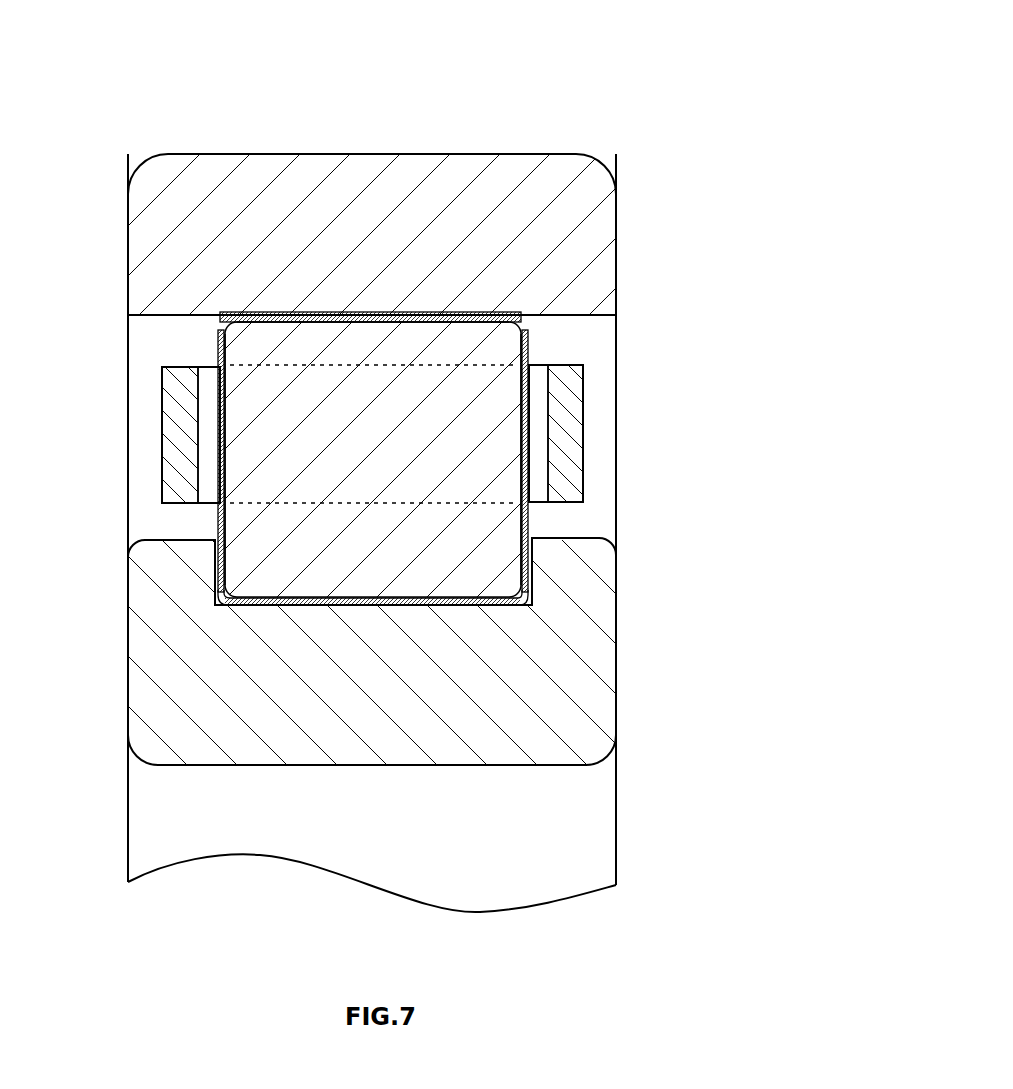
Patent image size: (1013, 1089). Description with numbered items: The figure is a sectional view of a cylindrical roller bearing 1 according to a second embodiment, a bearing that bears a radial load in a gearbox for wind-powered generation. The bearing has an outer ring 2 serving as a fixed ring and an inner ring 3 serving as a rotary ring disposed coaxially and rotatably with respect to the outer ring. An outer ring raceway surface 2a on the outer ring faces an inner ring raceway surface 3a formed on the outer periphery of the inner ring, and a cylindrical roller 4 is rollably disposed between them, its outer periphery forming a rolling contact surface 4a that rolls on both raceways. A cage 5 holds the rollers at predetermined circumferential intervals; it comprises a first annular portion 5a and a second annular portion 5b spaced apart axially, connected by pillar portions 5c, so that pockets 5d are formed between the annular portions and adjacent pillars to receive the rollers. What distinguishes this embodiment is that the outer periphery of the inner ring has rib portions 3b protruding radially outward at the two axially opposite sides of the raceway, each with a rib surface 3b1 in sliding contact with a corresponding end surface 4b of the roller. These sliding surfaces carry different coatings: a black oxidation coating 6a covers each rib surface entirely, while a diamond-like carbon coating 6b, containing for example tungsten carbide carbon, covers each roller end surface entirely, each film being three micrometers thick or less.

The cylindrical roller bearing 1 is at (605, 118).
The outer ring 2 is at (618, 225).
The outer ring raceway surface 2a is at (305, 314).
The inner ring 3 is at (620, 643).
The inner ring raceway surface 3a is at (440, 596).
The rib portion 3b is at (165, 538).
The rib surface 3b1 is at (230, 560).
The cylindrical roller 4 is at (530, 520).
The rolling contact surface 4a is at (438, 322).
The end surface 4b is at (224, 424).
The cage 5 is at (584, 405).
The first annular portion 5a is at (165, 422).
The second annular portion 5b is at (580, 455).
The pillar portion 5c is at (215, 367).
The pocket 5d is at (200, 490).
The black oxidation coating 6a is at (348, 312).
The diamond-like carbon coating 6b is at (218, 338).